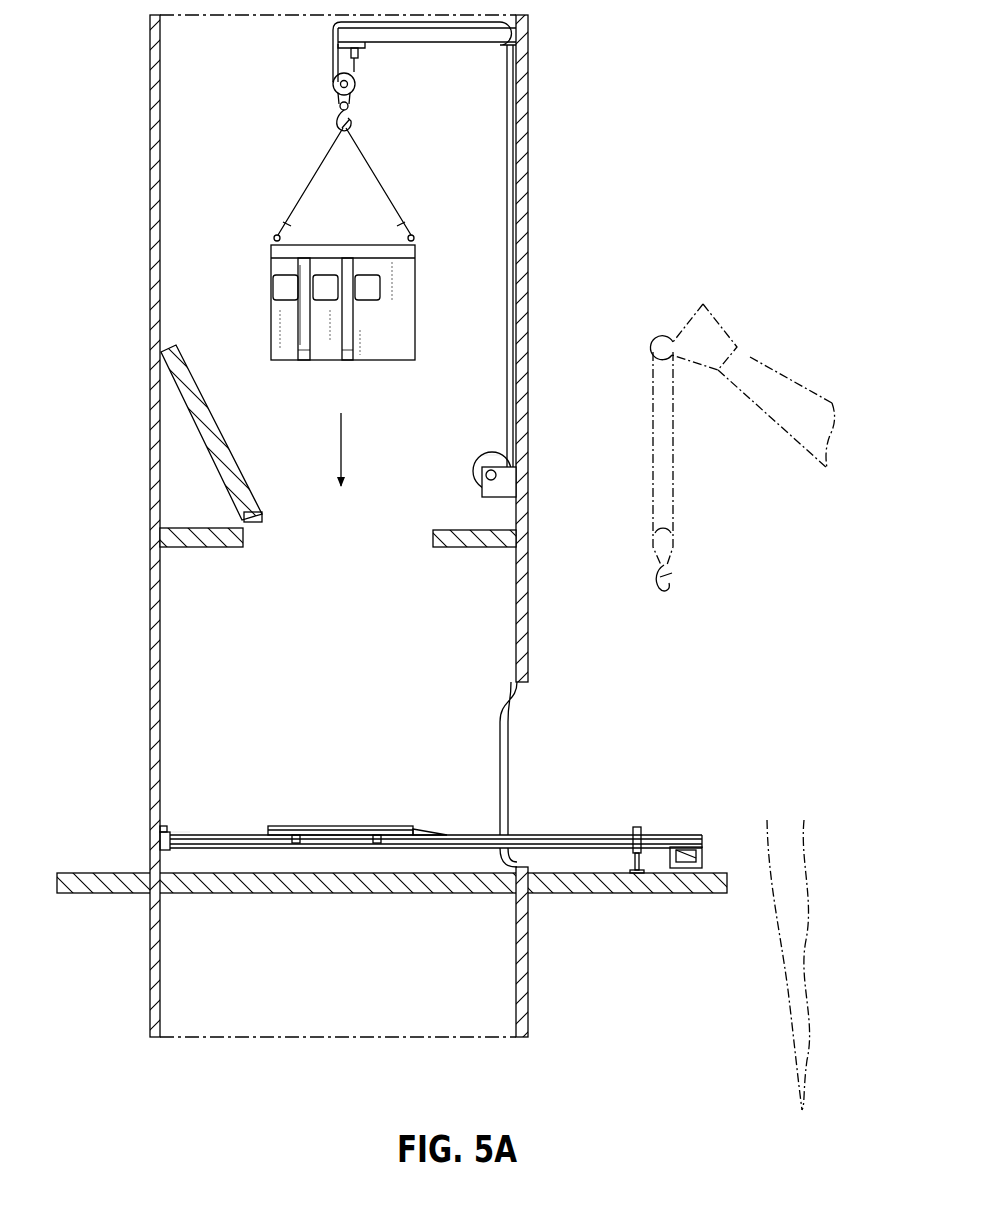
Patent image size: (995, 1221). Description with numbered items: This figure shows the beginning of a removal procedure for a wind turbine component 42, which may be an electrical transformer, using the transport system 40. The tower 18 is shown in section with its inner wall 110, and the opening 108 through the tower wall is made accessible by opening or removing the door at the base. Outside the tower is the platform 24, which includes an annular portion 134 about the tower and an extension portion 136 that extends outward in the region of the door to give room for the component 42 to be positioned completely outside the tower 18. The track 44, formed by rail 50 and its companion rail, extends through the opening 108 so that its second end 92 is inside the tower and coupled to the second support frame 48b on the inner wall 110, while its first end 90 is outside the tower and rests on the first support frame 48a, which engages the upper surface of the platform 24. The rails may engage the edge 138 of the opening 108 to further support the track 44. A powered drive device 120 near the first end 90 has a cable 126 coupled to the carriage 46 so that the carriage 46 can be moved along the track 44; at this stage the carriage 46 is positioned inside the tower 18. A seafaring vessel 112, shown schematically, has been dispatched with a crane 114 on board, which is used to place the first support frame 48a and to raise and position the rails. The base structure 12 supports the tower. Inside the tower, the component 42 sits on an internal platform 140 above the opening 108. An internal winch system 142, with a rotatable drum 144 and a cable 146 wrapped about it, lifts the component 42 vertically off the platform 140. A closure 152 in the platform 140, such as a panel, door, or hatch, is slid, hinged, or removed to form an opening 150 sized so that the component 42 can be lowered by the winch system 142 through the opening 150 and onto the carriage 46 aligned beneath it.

The base support frame 12 is at (530, 997).
The tower 18 is at (530, 278).
The platform 24 is at (86, 895).
The transport system 40 is at (430, 857).
The wind turbine component 42 is at (335, 243).
The track 44 is at (257, 831).
The carriage 46 is at (416, 828).
The first support frame 48a is at (636, 827).
The second support frame 48b is at (160, 830).
The rail 50 is at (207, 843).
The first end 90 is at (690, 834).
The second end 92 is at (182, 834).
The opening 108 is at (507, 721).
The inner wall 110 is at (160, 664).
The seafaring vessel 112 is at (781, 1016).
The crane 114 is at (688, 323).
The powered drive device 120 is at (705, 855).
The cable 126 is at (445, 832).
The annular portion 134 is at (118, 895).
The extension portion 136 is at (665, 894).
The edge 138 is at (521, 866).
The platform 140 is at (196, 548).
The internal winch system 142 is at (489, 438).
The rotatable drum 144 is at (474, 473).
The cable 146 is at (507, 357).
The opening 150 is at (433, 534).
The closure 152 is at (197, 386).